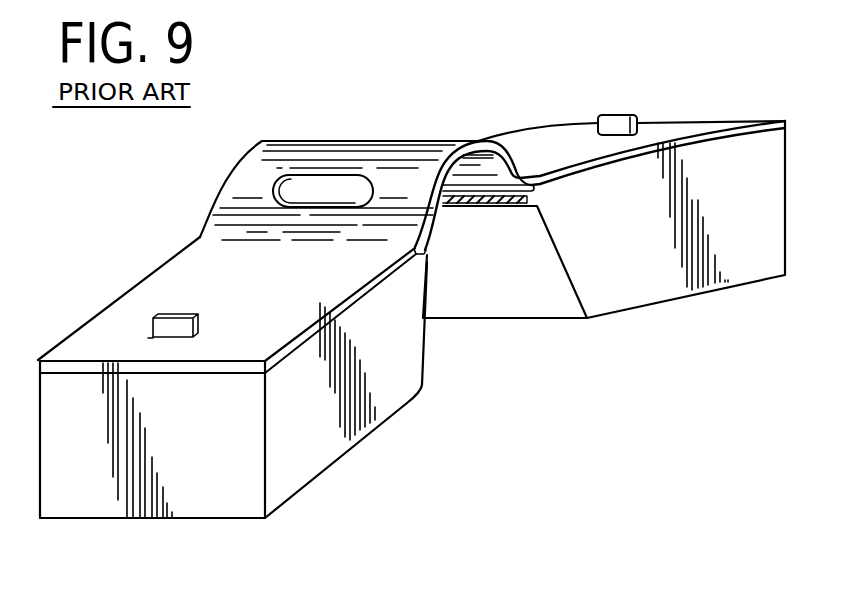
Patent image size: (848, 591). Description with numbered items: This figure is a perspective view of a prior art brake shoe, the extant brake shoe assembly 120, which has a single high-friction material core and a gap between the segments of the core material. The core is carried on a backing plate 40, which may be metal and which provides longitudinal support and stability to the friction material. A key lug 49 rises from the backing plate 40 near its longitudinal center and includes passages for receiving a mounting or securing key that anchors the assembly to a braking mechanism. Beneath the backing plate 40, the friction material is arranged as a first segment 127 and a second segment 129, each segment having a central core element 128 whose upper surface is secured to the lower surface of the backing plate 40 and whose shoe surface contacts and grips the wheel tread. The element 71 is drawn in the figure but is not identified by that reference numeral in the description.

The extant brake shoe assembly 120 is at (135, 156).
The backing plate 40 is at (176, 272).
The key lug 49 is at (308, 141).
The spacer block 71 is at (477, 332).
The first brake shoe segment 127 is at (390, 434).
The core element 128 is at (205, 492).
The second brake shoe segment 129 is at (724, 303).